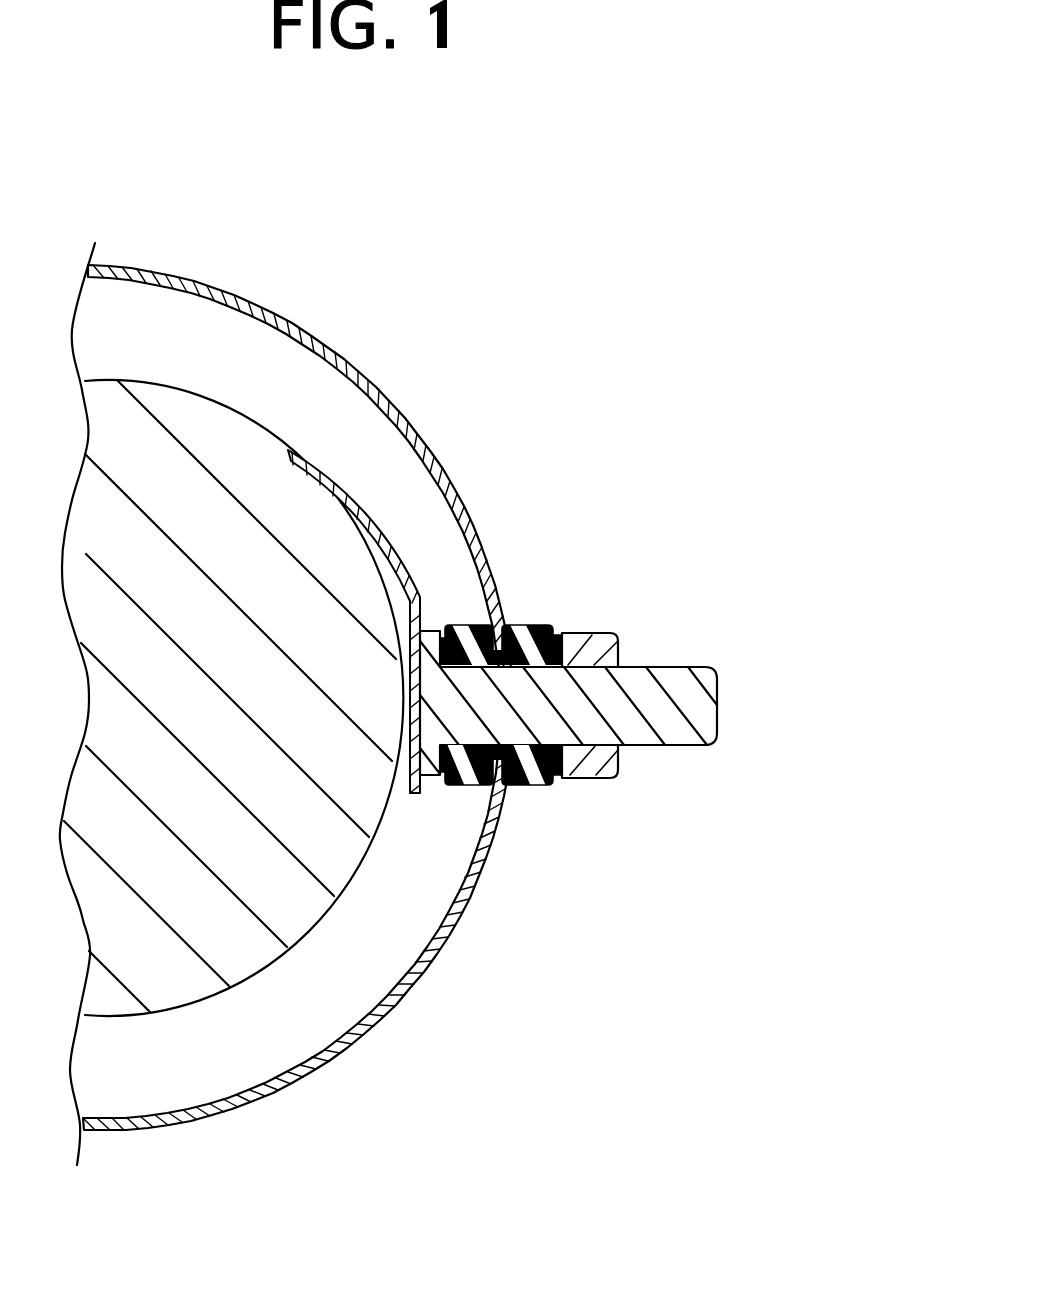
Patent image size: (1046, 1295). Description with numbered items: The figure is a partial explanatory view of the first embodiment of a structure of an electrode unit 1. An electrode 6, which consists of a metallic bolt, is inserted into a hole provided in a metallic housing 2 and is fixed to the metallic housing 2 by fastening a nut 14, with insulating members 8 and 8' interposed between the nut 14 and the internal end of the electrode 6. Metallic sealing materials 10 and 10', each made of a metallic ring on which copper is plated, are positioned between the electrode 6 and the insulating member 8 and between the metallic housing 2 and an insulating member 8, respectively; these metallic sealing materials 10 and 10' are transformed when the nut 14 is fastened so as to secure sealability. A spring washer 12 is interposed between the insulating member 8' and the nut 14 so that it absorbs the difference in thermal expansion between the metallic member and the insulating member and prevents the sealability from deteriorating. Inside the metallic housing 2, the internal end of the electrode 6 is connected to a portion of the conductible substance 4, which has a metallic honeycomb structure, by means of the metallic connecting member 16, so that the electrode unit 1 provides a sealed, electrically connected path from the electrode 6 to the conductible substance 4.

The electrode unit 1 is at (742, 653).
The metallic housing 2 is at (393, 993).
The conductible substance 4 is at (258, 945).
The electrode 6 is at (667, 678).
The insulating member 8 is at (501, 563).
The insulating member 8' is at (532, 597).
The metallic sealing material 10 is at (501, 834).
The metallic sealing material 10' is at (535, 806).
The spring washer 12 is at (558, 630).
The nut 14 is at (602, 762).
The metallic connecting member 16 is at (370, 515).